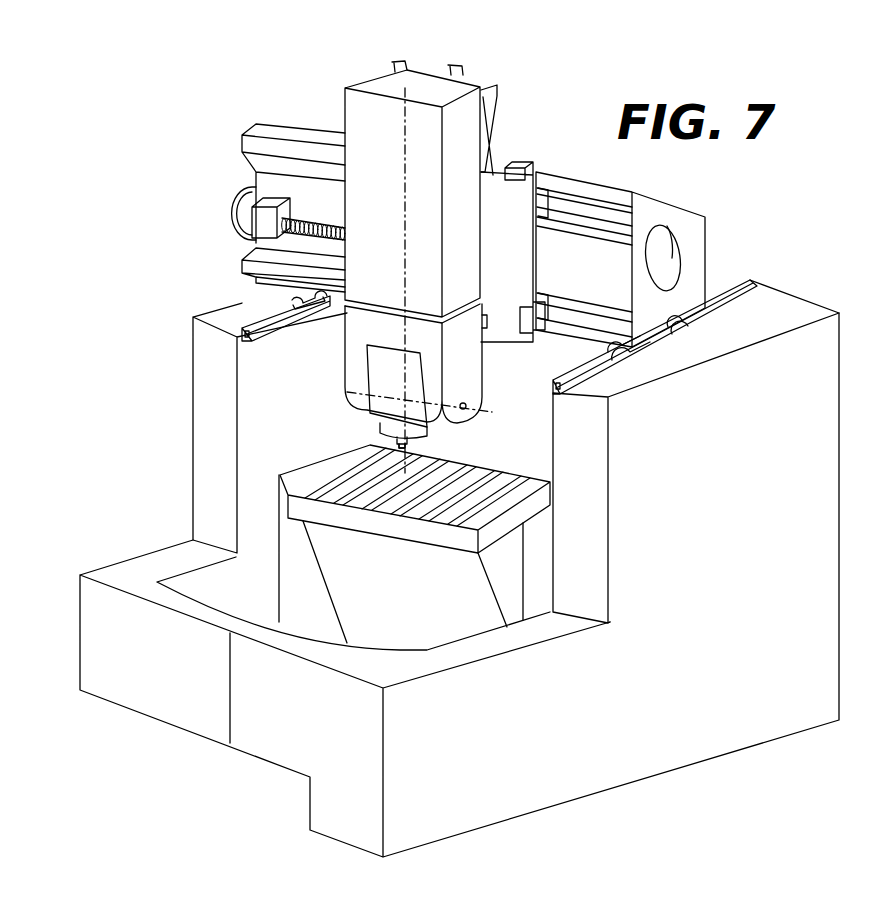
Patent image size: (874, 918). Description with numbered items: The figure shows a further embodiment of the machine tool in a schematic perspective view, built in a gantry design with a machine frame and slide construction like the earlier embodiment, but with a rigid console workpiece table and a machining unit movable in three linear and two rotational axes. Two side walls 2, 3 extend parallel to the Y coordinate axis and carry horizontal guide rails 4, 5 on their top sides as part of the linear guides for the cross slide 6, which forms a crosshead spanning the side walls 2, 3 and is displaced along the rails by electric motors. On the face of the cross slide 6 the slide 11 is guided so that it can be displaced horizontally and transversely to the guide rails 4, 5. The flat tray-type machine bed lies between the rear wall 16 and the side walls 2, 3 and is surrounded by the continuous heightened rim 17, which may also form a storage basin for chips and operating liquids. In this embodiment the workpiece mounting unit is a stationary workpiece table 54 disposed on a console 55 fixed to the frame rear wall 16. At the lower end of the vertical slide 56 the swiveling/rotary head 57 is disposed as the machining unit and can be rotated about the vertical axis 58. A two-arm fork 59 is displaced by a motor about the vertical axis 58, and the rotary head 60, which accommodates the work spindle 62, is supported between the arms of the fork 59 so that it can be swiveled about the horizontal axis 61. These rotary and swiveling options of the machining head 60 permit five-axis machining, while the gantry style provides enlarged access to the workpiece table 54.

The side wall 2 is at (210, 463).
The side wall 3 is at (724, 581).
The horizontal guide rail 4 is at (253, 323).
The horizontal guide rail 5 is at (740, 282).
The cross slide 6 is at (693, 248).
The slide 11 is at (526, 258).
The rear wall 16 is at (544, 419).
The heightened rim 17 is at (447, 741).
The workpiece table 54 is at (553, 512).
The console 55 is at (409, 601).
The vertical slide 56 is at (480, 116).
The swiveling/rotary head 57 is at (308, 412).
The vertical axis 58 is at (405, 255).
The two-arm fork 59 is at (467, 365).
The rotary head 60 is at (383, 372).
The horizontal axis 61 is at (466, 406).
The work spindle 62 is at (380, 428).